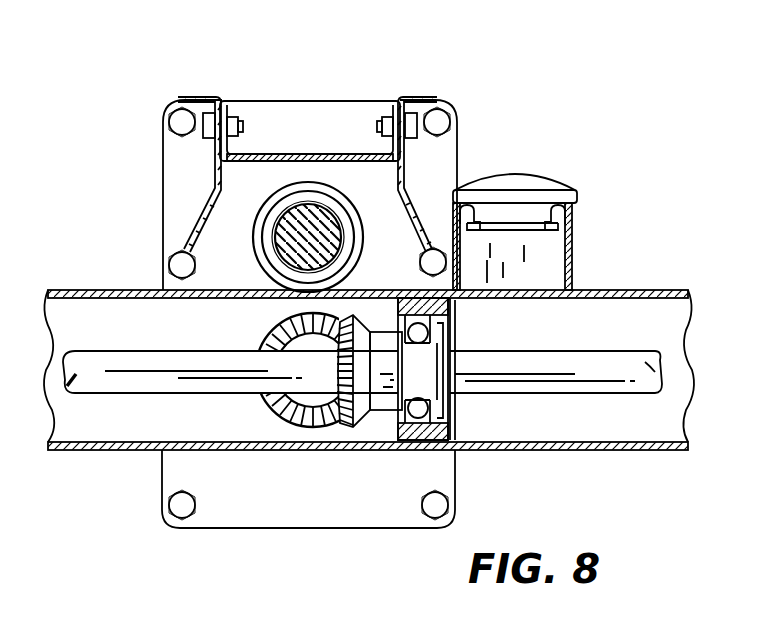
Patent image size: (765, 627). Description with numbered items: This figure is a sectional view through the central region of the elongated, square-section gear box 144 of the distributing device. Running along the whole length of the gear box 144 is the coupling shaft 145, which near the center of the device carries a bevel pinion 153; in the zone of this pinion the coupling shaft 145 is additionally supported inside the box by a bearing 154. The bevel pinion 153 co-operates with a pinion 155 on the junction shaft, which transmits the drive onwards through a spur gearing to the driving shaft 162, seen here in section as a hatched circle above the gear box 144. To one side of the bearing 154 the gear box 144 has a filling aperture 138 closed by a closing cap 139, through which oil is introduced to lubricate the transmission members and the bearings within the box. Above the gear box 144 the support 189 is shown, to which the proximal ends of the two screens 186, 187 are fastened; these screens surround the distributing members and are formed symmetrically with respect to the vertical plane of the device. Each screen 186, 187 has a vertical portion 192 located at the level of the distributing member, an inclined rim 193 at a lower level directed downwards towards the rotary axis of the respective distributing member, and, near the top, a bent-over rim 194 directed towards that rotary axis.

The filling aperture 138 is at (560, 265).
The closing cap 139 is at (545, 184).
The gear box 144 is at (80, 270).
The coupling shaft 145 is at (130, 330).
The bevel pinion 153 is at (345, 430).
The bearing 154 is at (455, 440).
The pinion 155 is at (275, 336).
The driving shaft 162 is at (286, 237).
The screen 186 is at (190, 233).
The screen 187 is at (413, 189).
The support 189 is at (282, 150).
The vertical portion 192 is at (215, 172).
The inclined rim 193 is at (197, 212).
The bent-over rim 194 is at (215, 63).